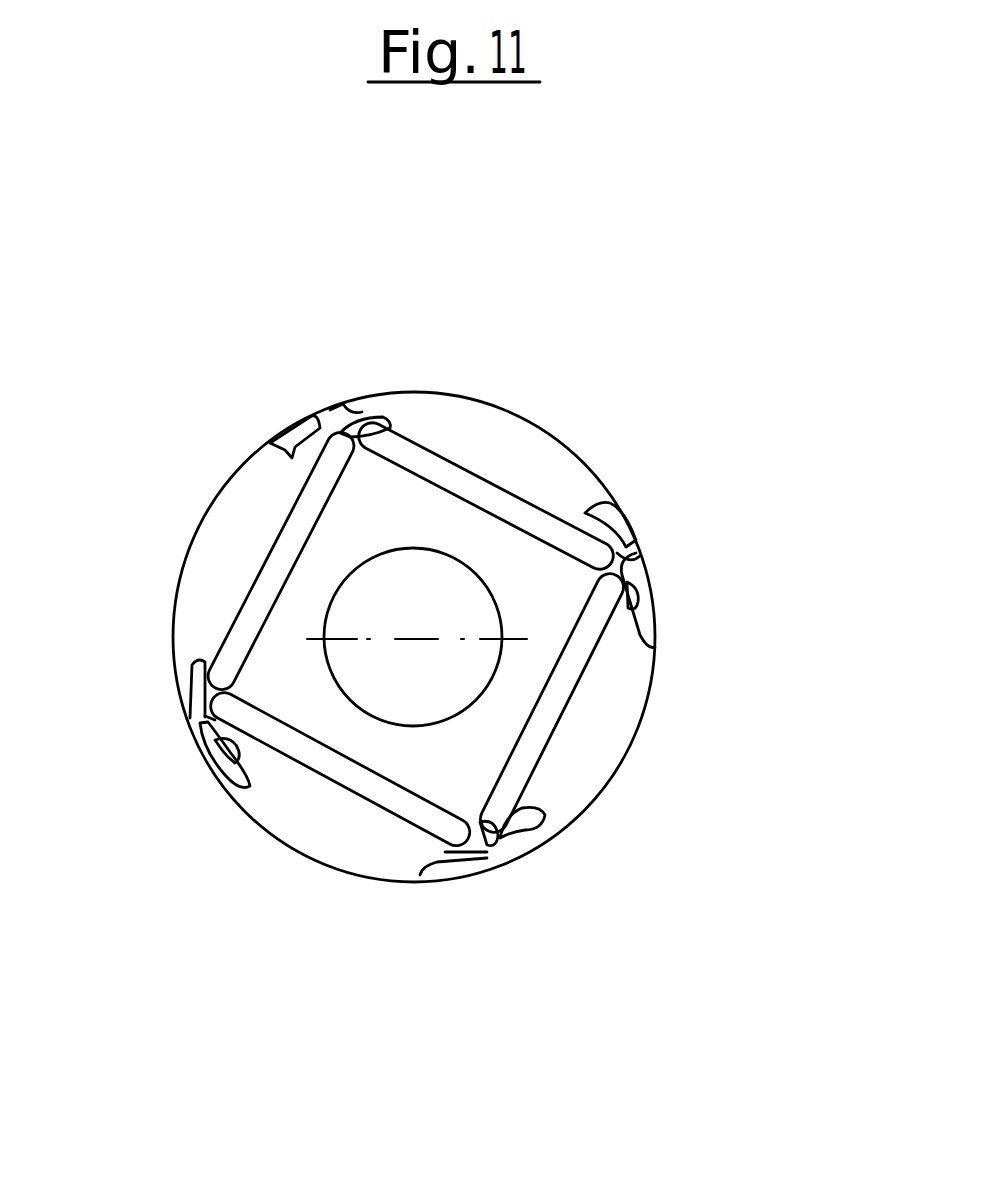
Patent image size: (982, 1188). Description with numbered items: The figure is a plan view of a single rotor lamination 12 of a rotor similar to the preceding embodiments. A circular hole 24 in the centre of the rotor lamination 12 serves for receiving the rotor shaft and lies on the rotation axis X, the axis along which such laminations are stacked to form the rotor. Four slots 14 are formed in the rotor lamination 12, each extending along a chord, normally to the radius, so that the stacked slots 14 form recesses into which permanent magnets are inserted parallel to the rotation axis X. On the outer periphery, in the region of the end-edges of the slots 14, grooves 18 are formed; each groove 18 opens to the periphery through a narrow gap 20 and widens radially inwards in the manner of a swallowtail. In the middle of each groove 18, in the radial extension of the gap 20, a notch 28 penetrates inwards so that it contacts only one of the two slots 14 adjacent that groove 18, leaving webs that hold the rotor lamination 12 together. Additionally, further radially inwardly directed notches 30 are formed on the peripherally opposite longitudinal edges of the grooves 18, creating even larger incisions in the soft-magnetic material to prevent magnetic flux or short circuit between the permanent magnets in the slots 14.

The rotor lamination 12 is at (658, 613).
The slot 14 is at (540, 527).
The groove 18 is at (332, 410).
The gap 20 is at (342, 403).
The circular hole 24 is at (397, 728).
The notch 28 is at (395, 415).
The notch 30 is at (410, 432).
The rotation axis X is at (432, 645).